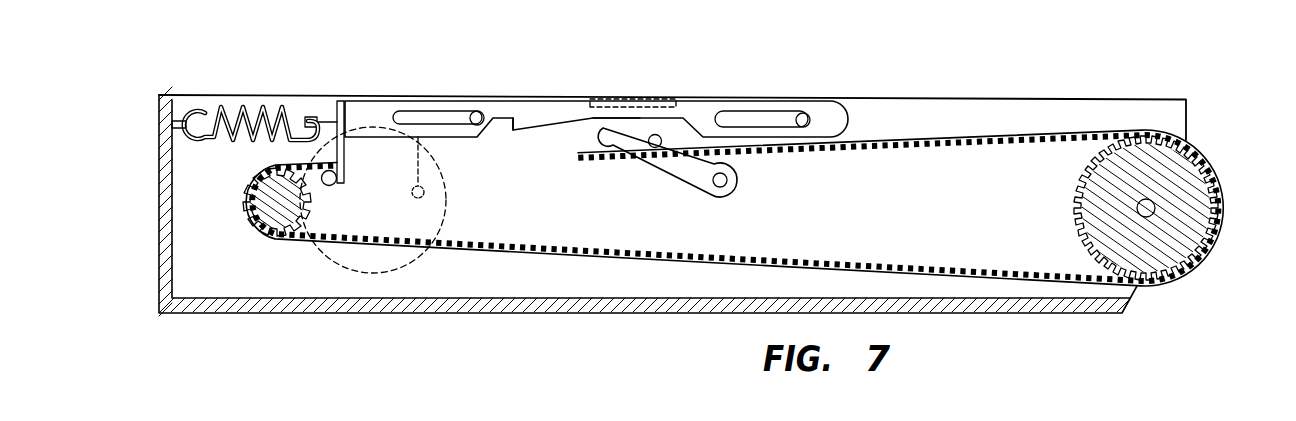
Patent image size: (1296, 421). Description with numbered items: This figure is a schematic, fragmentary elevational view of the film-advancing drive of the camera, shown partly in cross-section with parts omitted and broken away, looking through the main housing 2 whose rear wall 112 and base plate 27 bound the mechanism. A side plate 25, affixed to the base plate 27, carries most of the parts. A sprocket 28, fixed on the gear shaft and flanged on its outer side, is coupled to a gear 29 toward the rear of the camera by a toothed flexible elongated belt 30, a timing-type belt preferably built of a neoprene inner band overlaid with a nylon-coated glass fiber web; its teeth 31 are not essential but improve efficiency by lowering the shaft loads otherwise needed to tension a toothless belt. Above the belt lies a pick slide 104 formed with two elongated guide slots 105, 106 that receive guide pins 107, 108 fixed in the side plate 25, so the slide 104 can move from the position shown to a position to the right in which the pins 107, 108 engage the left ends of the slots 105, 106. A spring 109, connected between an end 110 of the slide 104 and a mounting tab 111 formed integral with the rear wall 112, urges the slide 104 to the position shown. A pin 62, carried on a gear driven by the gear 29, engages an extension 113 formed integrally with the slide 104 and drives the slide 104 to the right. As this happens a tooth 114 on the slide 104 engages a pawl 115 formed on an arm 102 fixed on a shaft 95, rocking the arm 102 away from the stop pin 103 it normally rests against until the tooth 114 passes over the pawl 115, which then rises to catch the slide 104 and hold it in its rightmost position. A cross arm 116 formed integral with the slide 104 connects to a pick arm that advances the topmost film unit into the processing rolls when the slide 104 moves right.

The main housing 2 is at (287, 330).
The side plate 25 is at (1178, 117).
The base plate 27 is at (496, 312).
The sprocket 28 is at (1205, 170).
The gear 29 is at (1156, 208).
The toothed flexible elongated belt 30 is at (955, 140).
The teeth 31 is at (968, 152).
The pin 62 is at (335, 185).
The shaft 95 is at (738, 181).
The arm 102 is at (698, 184).
The stop pin 103 is at (656, 149).
The pick slide 104 is at (532, 134).
The guide slot 105 is at (430, 114).
The guide slot 106 is at (760, 117).
The guide pin 107 is at (484, 112).
The guide pin 108 is at (812, 112).
The spring 109 is at (246, 108).
The end of the slide 110 is at (325, 120).
The mounting tab 111 is at (200, 110).
The rear wall 112 is at (158, 190).
The extension 113 is at (345, 155).
The tooth 114 is at (512, 131).
The pawl 115 is at (600, 130).
The cross arm 116 is at (640, 103).